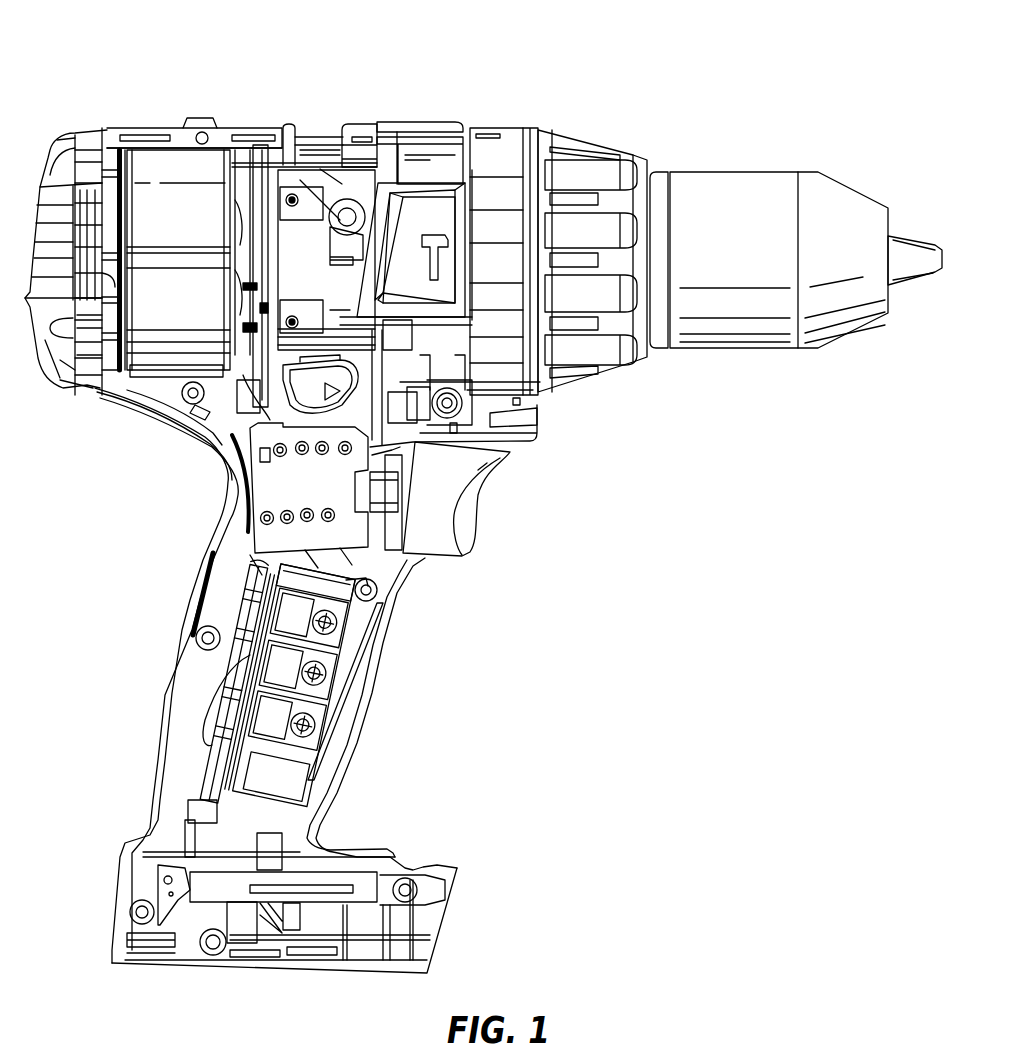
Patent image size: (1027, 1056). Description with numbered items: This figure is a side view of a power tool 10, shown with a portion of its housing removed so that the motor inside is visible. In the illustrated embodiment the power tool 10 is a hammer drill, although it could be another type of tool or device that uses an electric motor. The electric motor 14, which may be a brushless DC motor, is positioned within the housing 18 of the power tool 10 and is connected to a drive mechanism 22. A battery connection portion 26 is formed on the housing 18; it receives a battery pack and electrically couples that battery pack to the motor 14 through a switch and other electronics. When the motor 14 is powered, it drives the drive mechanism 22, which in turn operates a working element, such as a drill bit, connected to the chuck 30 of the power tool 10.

The power tool 10 is at (693, 86).
The electric motor 14 is at (170, 210).
The housing 18 is at (187, 370).
The drive mechanism 22 is at (308, 202).
The battery connection portion 26 is at (407, 865).
The chuck 30 is at (910, 252).